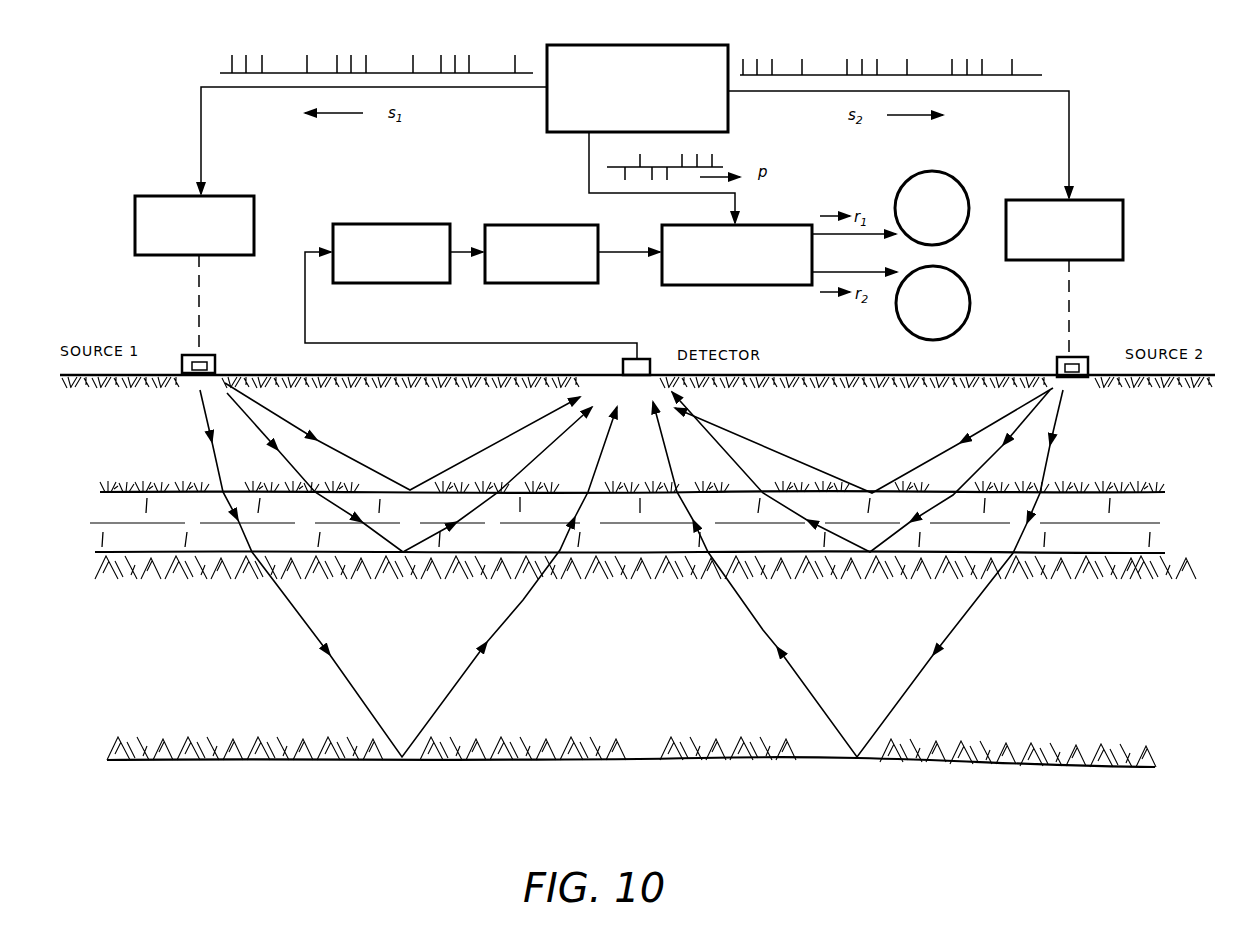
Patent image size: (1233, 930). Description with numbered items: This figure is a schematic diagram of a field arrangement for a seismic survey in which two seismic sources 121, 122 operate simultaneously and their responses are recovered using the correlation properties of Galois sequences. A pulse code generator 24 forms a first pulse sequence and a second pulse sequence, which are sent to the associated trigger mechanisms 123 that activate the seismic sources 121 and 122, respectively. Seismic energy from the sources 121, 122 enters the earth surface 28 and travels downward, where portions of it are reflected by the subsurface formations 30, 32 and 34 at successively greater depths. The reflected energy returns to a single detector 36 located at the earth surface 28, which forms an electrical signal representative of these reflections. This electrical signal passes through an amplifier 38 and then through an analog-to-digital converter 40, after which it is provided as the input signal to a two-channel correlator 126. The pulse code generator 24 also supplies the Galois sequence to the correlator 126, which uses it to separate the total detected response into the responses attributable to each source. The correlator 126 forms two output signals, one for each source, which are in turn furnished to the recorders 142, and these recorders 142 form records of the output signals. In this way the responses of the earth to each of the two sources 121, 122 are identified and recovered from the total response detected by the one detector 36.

The pulse code generator 24 is at (728, 104).
The trigger mechanism 123 is at (238, 196).
The seismic source 121 is at (210, 355).
The seismic source 122 is at (1083, 358).
The detector 36 is at (638, 359).
The amplifier 38 is at (407, 283).
The analog-to-digital converter 40 is at (538, 283).
The two-channel correlator 126 is at (713, 285).
The recorders 142 is at (963, 231).
The earth surface 28 is at (860, 375).
The subsurface formation 30 is at (618, 490).
The subsurface formation 32 is at (643, 543).
The subsurface formation 34 is at (617, 760).